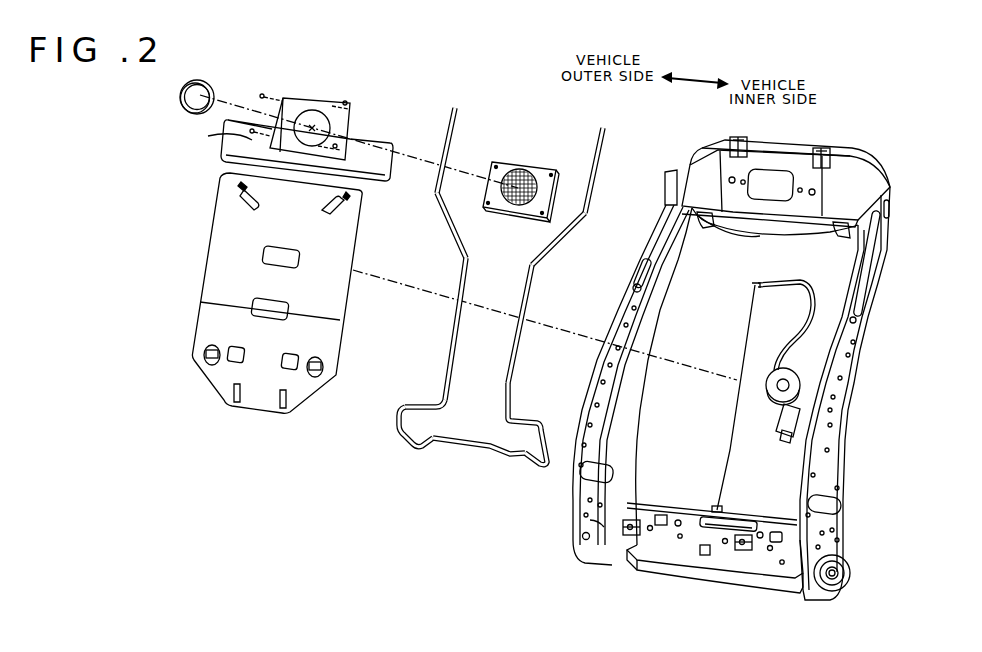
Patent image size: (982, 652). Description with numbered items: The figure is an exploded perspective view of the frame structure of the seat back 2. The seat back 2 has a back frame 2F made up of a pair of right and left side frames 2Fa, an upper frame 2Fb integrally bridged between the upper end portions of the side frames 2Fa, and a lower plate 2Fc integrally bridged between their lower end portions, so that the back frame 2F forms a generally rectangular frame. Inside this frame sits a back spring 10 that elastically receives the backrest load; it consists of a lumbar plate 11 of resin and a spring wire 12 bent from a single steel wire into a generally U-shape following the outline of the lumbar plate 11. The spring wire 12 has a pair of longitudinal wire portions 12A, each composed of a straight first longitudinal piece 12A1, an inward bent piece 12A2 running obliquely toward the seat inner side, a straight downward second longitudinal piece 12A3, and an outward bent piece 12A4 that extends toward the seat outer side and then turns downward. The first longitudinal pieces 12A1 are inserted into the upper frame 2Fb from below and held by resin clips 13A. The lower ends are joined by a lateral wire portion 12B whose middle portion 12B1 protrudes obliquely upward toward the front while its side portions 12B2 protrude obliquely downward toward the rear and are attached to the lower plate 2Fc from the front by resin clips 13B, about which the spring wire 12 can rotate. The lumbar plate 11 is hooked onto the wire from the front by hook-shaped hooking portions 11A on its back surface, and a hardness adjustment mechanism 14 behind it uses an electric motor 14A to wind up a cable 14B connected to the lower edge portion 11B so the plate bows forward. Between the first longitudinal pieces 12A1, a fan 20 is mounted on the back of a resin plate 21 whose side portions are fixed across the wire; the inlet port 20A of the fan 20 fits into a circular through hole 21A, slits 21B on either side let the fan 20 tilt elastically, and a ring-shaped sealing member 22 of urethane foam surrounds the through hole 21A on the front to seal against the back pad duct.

The seat back 2 is at (247, 521).
The back frame 2F is at (743, 363).
The side frames 2Fa is at (630, 342).
The upper frame 2Fb is at (771, 172).
The lower plate 2Fc is at (693, 537).
The back spring 10 is at (480, 301).
The lumbar plate 11 is at (218, 247).
The hooking portions 11A is at (242, 197).
The lower edge portion 11B is at (261, 400).
The spring wire 12 is at (502, 301).
The longitudinal wire portions 12A is at (502, 245).
The first longitudinal piece 12A1 is at (450, 135).
The inward bent piece 12A2 is at (450, 222).
The second longitudinal piece 12A3 is at (455, 308).
The outward bent piece 12A4 is at (418, 406).
The lateral wire portion 12B is at (474, 470).
The middle portion 12B1 is at (479, 464).
The side portions 12B2 is at (419, 450).
The clips 13A is at (703, 228).
The clips 13B is at (630, 536).
The hardness adjustment mechanism 14 is at (782, 369).
The electric motor 14A is at (786, 428).
The cable 14B is at (750, 314).
The fan 20 is at (521, 186).
The inlet port 20A is at (514, 208).
The resin plate 21 is at (372, 134).
The through hole 21A is at (312, 128).
The slits 21B is at (400, 179).
The sealing member 22 is at (178, 97).